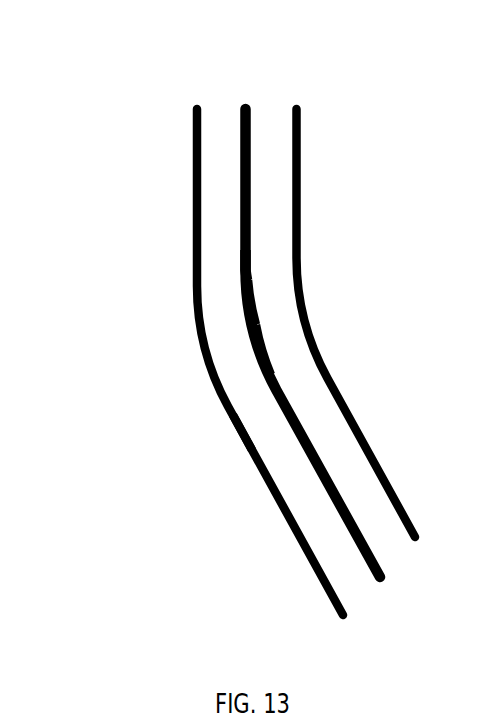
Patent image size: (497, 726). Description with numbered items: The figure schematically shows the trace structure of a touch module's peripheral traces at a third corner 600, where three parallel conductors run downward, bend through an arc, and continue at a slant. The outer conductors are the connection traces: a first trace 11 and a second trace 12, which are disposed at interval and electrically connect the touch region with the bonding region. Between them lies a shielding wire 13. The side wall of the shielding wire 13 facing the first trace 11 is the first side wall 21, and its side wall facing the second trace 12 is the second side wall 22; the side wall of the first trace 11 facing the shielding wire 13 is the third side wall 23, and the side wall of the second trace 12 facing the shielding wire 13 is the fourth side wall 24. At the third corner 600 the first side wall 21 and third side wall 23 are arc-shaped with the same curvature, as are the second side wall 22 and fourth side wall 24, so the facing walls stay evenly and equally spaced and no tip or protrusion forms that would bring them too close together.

The third corner 600 is at (135, 90).
The first trace 11 is at (300, 190).
The second trace 12 is at (192, 166).
The shielding wire 13 is at (251, 148).
The first side wall 21 is at (250, 263).
The second side wall 22 is at (243, 302).
The third side wall 23 is at (258, 362).
The fourth side wall 24 is at (248, 433).